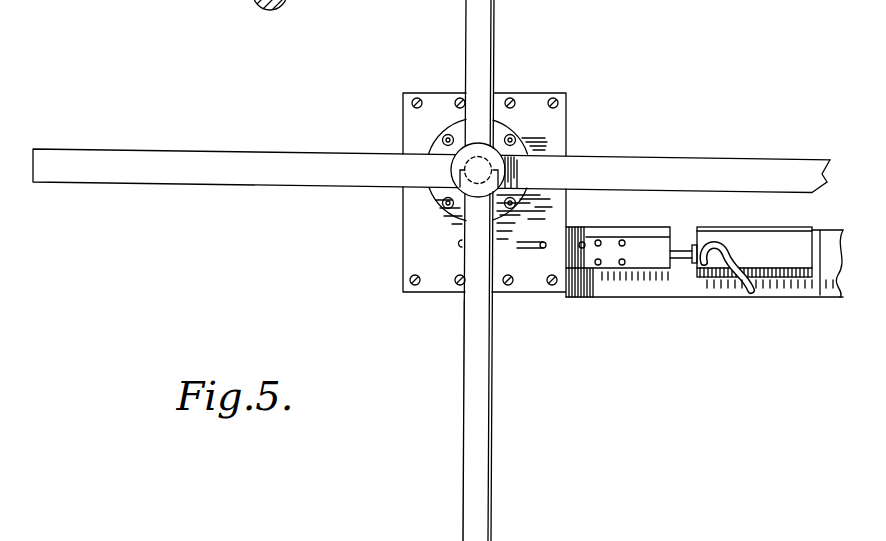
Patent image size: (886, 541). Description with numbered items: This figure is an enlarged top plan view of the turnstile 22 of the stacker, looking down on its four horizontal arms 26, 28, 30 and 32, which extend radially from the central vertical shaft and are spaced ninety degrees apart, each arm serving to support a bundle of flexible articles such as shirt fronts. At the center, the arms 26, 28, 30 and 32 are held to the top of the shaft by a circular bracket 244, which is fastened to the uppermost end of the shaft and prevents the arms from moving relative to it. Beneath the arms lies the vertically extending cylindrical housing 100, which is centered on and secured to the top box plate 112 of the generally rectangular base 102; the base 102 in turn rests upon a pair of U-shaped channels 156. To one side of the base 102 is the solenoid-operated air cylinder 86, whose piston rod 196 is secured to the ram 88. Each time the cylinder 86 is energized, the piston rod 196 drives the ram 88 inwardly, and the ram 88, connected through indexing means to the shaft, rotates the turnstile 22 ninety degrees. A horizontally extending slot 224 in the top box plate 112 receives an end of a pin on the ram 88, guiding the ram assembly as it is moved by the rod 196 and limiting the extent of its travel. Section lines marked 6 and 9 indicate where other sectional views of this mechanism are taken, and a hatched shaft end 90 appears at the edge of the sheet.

The turnstile 22 is at (310, 262).
The arm 26 is at (700, 168).
The arm 28 is at (487, 422).
The arm 30 is at (201, 178).
The arm 32 is at (488, 33).
The solenoid-operated air cylinder 86 is at (792, 265).
The ram 88 is at (638, 262).
The shaft 90 is at (246, 6).
The cylindrical housing 100 is at (427, 153).
The base 102 is at (430, 280).
The top box plate 112 is at (562, 118).
The U-shaped channels 156 is at (703, 288).
The piston rod 196 is at (682, 260).
The slot 224 is at (518, 247).
The circular bracket 244 is at (481, 150).
The section line 6- 6 is at (383, 183).
The section line 9- 9 is at (390, 242).